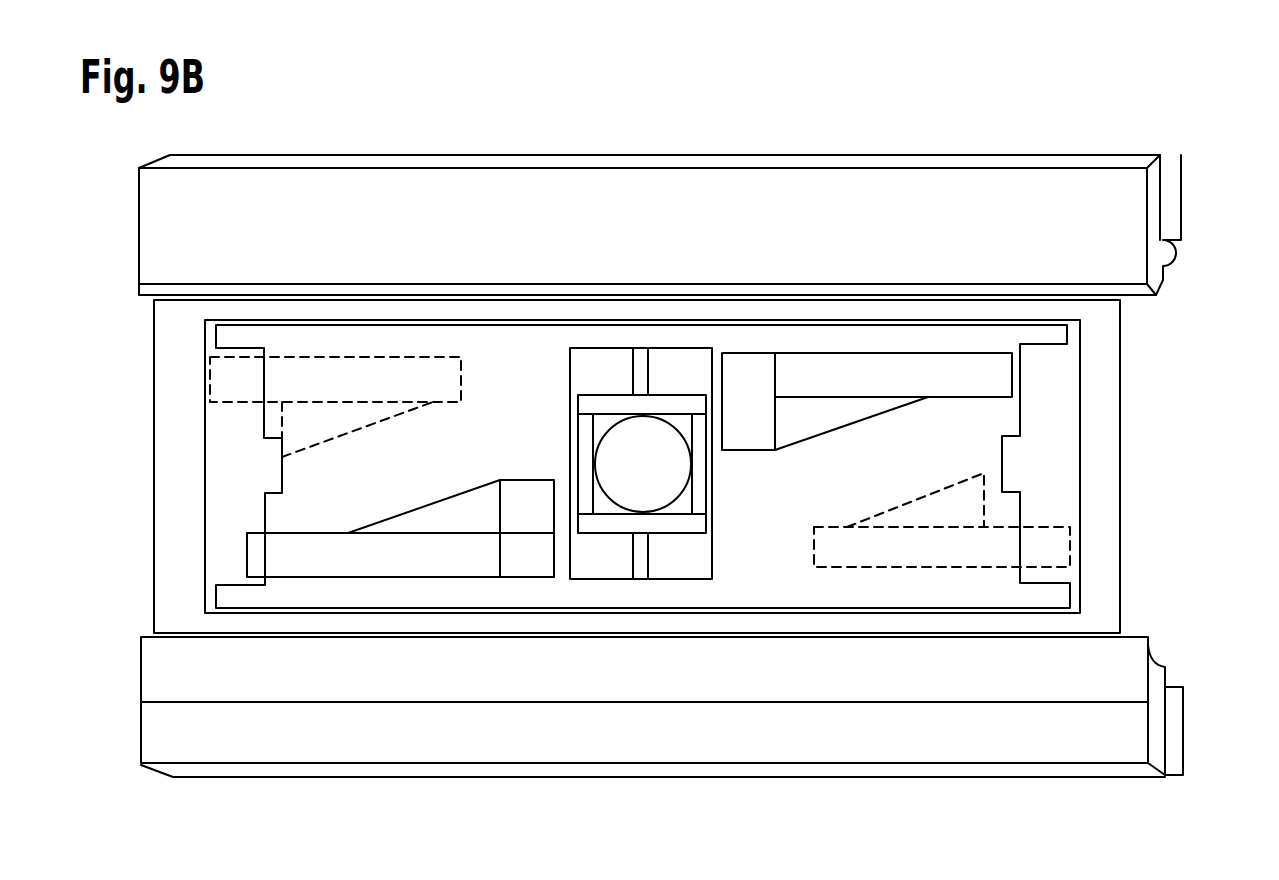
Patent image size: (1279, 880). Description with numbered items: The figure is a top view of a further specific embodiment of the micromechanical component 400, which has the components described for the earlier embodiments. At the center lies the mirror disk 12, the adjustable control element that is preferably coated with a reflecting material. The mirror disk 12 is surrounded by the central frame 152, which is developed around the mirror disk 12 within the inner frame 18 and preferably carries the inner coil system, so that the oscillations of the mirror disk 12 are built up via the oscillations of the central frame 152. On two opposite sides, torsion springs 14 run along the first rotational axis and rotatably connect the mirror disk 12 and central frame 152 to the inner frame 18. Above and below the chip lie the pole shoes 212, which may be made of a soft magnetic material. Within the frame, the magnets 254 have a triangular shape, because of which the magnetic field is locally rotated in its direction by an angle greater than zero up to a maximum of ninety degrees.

The micromechanical component 400 is at (1172, 356).
The pole shoe 212 is at (595, 202).
The inner frame 18 is at (1002, 512).
The magnet 254 is at (437, 550).
The torsion spring 14 is at (643, 378).
The central frame 152 is at (667, 525).
The mirror disk 12 is at (622, 478).